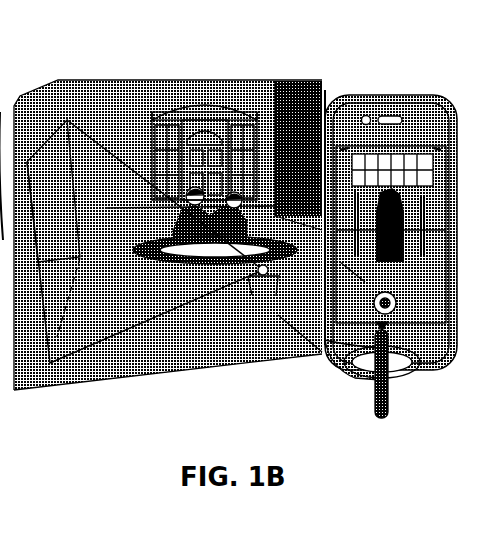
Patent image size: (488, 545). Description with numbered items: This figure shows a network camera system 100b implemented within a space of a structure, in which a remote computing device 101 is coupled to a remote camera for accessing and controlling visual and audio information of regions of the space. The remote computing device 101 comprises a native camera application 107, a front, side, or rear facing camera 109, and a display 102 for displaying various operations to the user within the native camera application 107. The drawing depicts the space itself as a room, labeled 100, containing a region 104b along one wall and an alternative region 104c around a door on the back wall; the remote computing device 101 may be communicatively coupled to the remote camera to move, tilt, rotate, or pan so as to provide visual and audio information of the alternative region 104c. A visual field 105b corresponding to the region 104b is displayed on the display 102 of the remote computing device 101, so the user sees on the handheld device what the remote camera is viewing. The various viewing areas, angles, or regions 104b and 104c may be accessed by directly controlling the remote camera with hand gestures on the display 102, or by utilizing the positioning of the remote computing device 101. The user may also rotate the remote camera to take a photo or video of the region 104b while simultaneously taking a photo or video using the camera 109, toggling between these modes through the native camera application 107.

The physical environment / scene 100b is at (167, 64).
The region 104b is at (53, 126).
The alternative region 104c is at (230, 100).
The visual field 105b is at (324, 198).
The object / table 100 is at (270, 272).
The remote computing device 101 is at (399, 95).
The camera 109 is at (366, 115).
The native camera application 107 is at (375, 296).
The display 102 is at (426, 328).